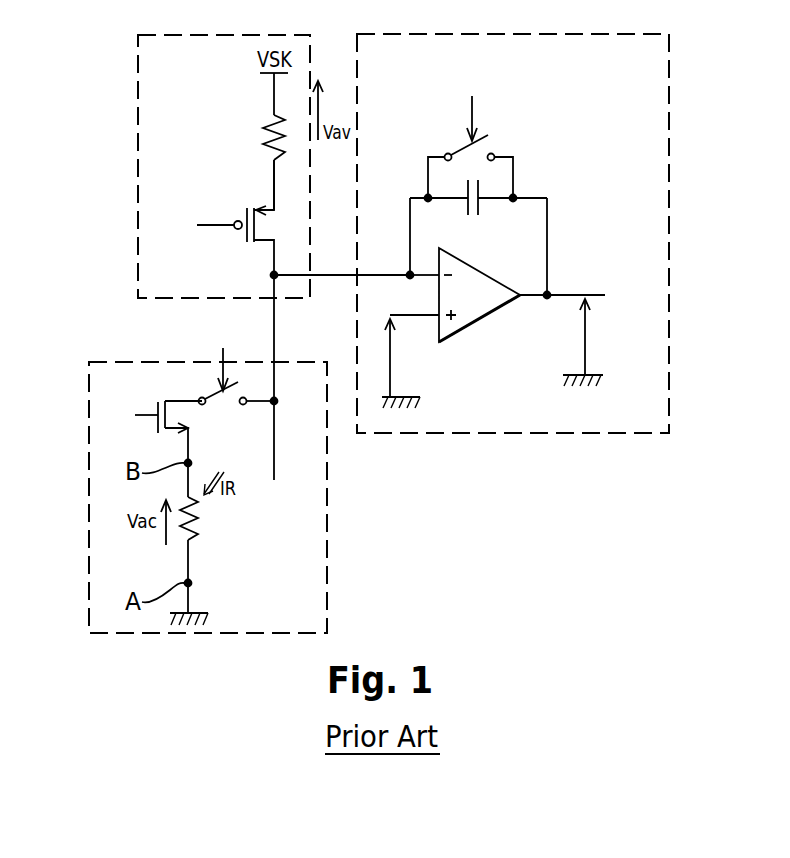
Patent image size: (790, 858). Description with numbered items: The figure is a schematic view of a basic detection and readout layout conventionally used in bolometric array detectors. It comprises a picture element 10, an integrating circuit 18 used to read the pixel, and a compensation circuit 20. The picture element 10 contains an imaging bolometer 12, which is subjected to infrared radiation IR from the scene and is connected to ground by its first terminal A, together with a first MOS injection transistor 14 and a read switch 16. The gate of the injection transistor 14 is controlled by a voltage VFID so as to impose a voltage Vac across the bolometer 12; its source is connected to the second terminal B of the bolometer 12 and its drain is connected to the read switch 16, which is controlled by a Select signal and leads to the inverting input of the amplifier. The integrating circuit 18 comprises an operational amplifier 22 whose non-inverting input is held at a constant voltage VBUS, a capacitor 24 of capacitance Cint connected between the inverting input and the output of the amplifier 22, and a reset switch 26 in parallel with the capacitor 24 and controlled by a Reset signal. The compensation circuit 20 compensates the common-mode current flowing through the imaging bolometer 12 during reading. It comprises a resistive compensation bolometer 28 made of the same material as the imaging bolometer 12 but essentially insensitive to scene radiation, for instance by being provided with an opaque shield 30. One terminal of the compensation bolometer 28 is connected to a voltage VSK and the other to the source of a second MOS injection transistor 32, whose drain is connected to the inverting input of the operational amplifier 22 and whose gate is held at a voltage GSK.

The picture element 10 is at (88, 500).
The imaging bolometer 12 is at (198, 537).
The first MOS injection transistor 14 is at (170, 398).
The read switch 16 is at (218, 395).
The integrating circuit 18 is at (670, 296).
The compensation circuit 20 is at (137, 140).
The operational amplifier 22 is at (483, 307).
The capacitor 24 is at (478, 202).
The reset switch 26 is at (465, 150).
The compensation bolometer 28 is at (272, 184).
The opaque shield 30 is at (258, 138).
The second MOS injection transistor 32 is at (243, 212).